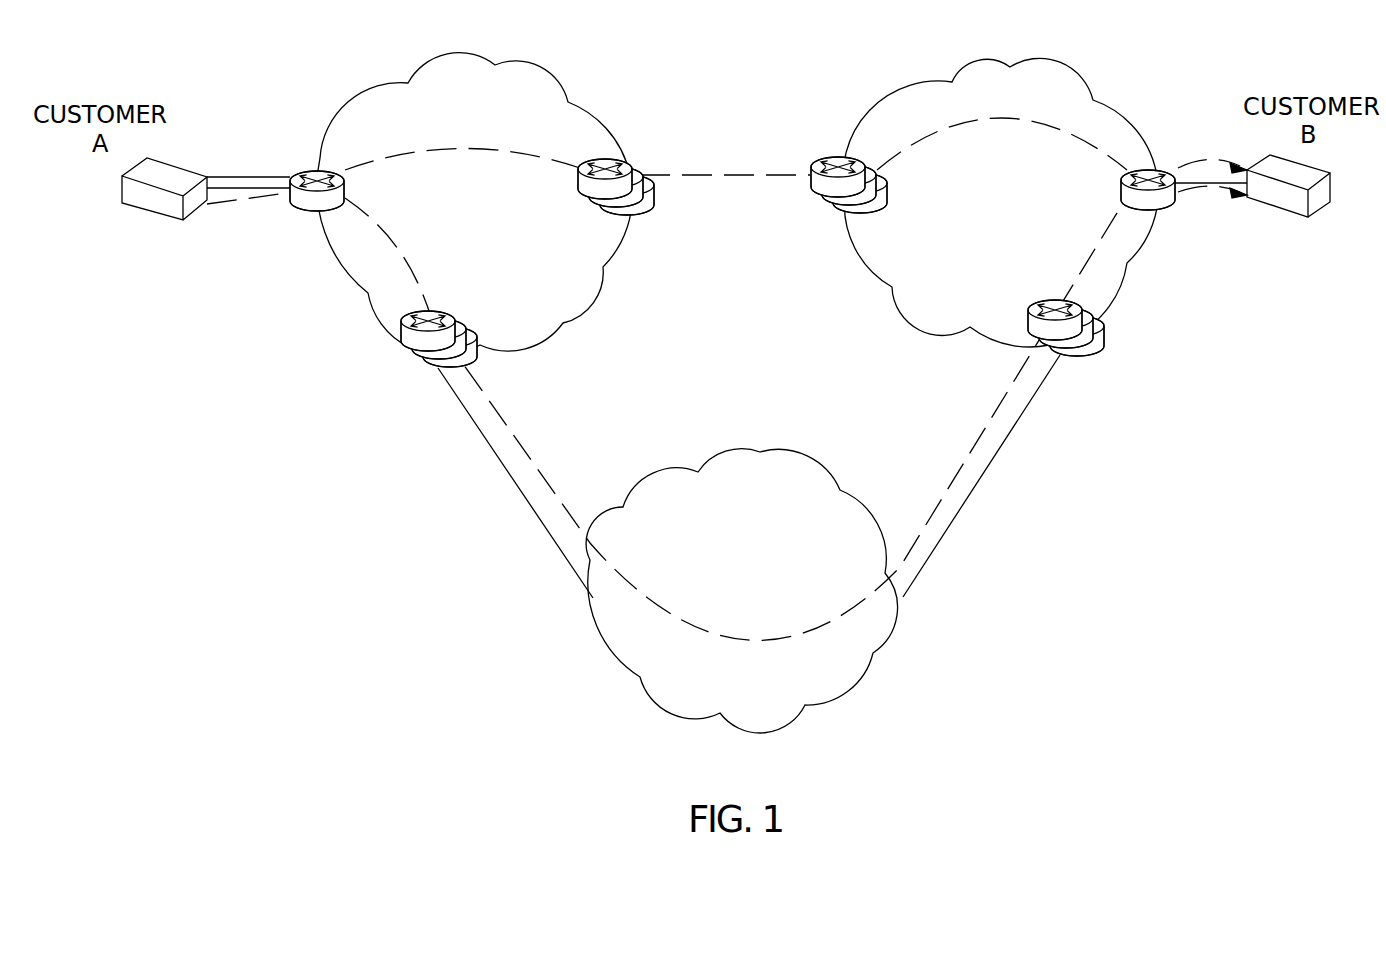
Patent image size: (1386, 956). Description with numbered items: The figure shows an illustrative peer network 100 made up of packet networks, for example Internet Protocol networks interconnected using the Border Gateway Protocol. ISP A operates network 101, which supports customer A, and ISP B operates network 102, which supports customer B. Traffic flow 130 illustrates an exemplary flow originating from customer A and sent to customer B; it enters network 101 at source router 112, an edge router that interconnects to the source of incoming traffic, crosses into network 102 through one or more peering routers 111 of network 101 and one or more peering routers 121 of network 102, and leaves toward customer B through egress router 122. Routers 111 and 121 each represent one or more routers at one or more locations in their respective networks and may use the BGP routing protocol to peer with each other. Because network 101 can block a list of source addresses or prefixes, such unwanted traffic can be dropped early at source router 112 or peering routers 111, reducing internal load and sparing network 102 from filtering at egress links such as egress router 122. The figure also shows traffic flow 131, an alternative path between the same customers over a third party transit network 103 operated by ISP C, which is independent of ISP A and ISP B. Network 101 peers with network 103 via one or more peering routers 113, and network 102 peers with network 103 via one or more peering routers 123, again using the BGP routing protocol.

The peer network 100 is at (232, 72).
The network 101 is at (514, 222).
The network 102 is at (1020, 220).
The third party transit network 103 is at (785, 556).
The peering routers 111 is at (640, 213).
The source router 112 is at (300, 206).
The peering routers 113 is at (402, 345).
The peering routers 121 is at (830, 213).
The egress router 122 is at (1173, 207).
The peering routers 123 is at (1100, 353).
The traffic flow 130 is at (489, 100).
The traffic flow 131 is at (532, 470).